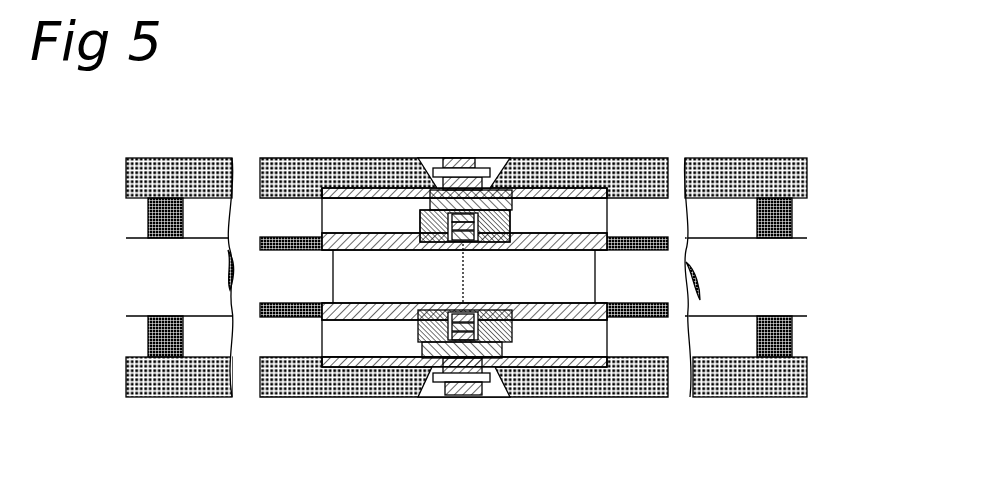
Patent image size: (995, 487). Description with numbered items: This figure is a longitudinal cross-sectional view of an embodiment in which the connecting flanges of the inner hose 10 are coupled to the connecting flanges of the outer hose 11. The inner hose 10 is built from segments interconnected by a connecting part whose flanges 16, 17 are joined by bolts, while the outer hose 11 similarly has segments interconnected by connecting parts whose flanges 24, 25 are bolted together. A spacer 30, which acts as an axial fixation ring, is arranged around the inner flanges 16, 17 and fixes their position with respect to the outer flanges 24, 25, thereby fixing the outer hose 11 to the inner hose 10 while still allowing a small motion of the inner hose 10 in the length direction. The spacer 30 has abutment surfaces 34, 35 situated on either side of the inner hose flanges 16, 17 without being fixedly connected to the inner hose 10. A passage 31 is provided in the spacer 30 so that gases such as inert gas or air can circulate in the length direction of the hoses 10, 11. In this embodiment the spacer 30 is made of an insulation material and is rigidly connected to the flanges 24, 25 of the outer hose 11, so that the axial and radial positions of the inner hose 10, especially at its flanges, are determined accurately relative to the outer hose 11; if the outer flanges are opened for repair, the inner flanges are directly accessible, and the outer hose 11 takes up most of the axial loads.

The inner hose 10 is at (775, 273).
The outer hose 11 is at (613, 175).
The flange 16 is at (470, 224).
The flange 17 is at (457, 233).
The flange 24 is at (478, 165).
The flange 25 is at (446, 165).
The spacer 30 is at (465, 392).
The passage 31 is at (503, 343).
The abutment surface 34 is at (478, 218).
The abutment surface 35 is at (448, 215).